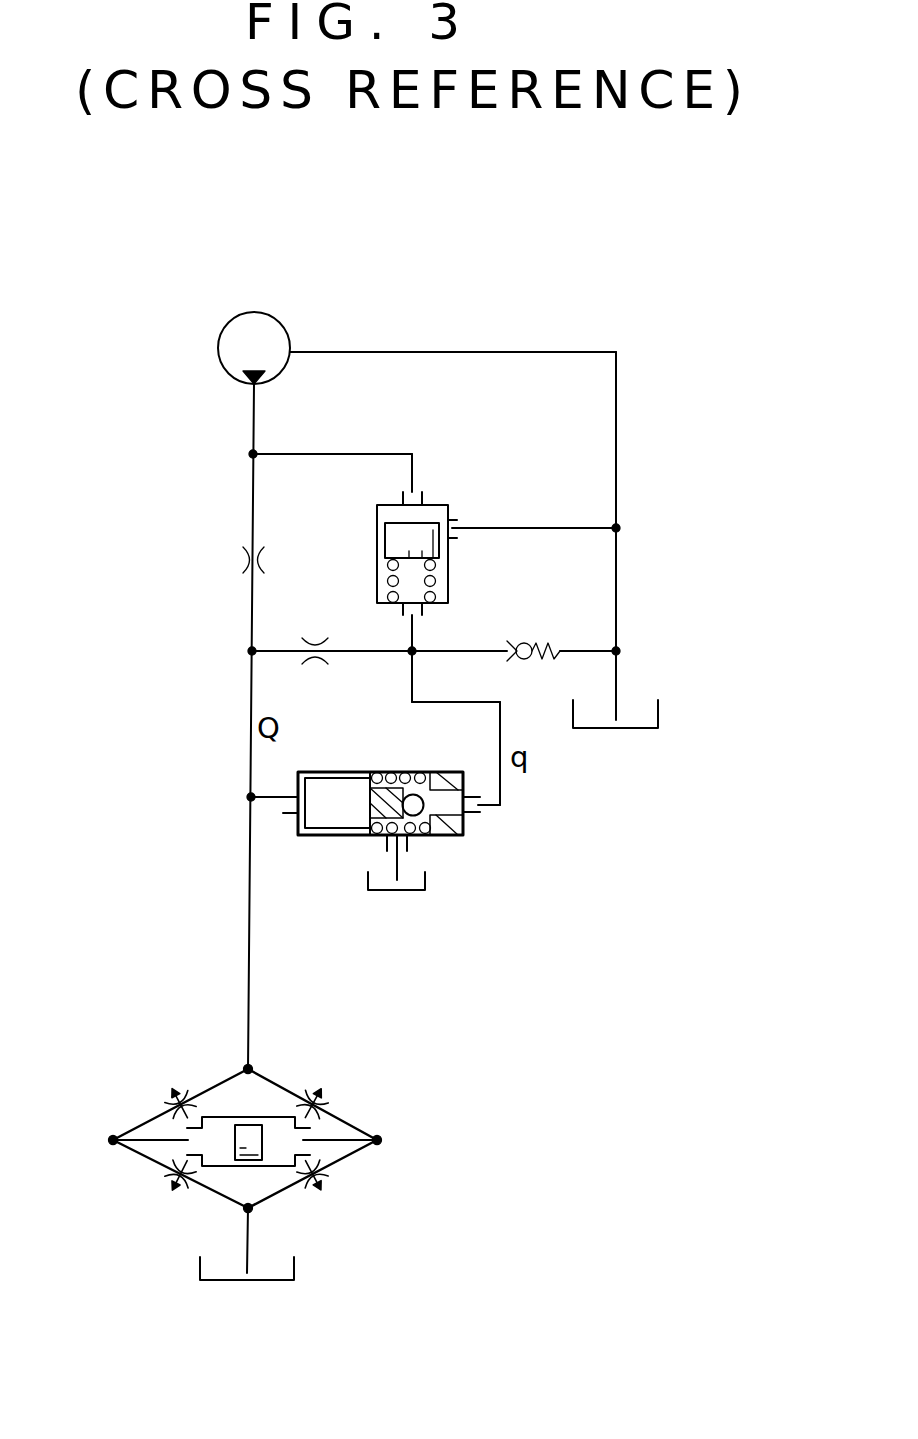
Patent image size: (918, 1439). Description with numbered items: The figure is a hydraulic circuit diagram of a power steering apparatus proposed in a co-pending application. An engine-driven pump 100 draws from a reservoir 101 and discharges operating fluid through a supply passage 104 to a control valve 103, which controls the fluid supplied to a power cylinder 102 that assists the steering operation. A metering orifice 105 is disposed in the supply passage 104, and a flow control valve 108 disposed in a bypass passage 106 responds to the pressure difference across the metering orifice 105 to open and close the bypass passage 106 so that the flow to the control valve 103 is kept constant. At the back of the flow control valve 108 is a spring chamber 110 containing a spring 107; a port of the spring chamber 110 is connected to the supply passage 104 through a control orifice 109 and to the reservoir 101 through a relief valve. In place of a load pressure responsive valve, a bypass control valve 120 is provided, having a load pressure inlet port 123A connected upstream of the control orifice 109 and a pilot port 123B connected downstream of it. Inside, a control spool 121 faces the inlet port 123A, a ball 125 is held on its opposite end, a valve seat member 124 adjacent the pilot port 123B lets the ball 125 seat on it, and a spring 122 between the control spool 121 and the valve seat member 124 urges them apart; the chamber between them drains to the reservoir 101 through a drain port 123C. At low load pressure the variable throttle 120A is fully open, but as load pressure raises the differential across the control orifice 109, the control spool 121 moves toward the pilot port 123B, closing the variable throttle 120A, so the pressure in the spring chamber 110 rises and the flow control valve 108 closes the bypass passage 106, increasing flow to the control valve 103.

The engine-driven pump 100 is at (264, 312).
The reservoir 101 is at (662, 715).
The power cylinder 102 is at (257, 1177).
The control valve 103 is at (363, 1112).
The supply passage 104 is at (248, 616).
The metering orifice 105 is at (240, 560).
The bypass passage 106 is at (460, 523).
The spring 107 is at (436, 578).
The flow control valve 108 is at (374, 555).
The control orifice 109 is at (315, 668).
The spring chamber 110 is at (416, 592).
The bypass control valve 120 is at (345, 772).
The variable throttle 120A is at (432, 800).
The control spool 121 is at (333, 820).
The spring 122 is at (405, 772).
The load pressure inlet port 123A is at (298, 813).
The pilot port 123B is at (473, 798).
The drain port 123C is at (390, 852).
The valve seat member 124 is at (462, 837).
The ball 125 is at (422, 833).